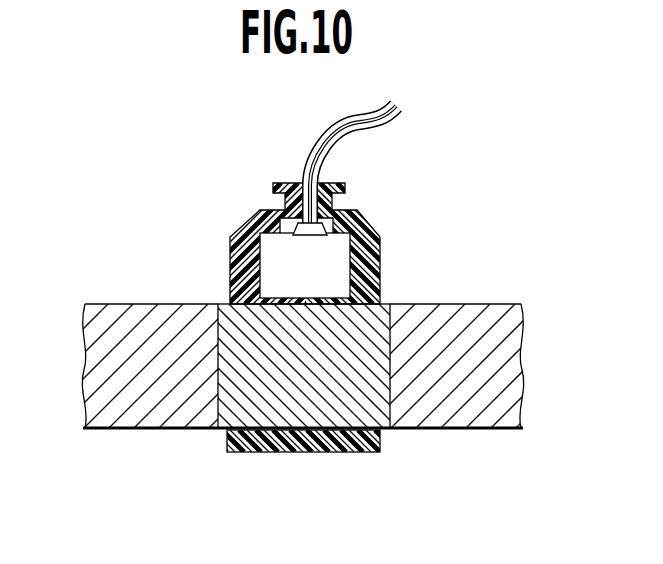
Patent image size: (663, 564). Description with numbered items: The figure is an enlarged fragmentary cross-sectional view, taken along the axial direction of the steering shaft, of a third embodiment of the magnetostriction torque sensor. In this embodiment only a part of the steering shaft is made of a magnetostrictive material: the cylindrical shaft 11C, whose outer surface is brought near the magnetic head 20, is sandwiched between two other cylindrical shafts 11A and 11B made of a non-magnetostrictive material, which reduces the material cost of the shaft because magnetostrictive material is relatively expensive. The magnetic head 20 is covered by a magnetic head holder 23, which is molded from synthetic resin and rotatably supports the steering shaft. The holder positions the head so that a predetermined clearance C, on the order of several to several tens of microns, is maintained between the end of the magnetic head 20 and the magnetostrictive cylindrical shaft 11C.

The cylindrical shaft 11A is at (148, 415).
The cylindrical shaft 11B is at (468, 410).
The cylindrical shaft 11C is at (240, 413).
The magnetic head 20 is at (328, 252).
The magnetic head holder 23 is at (367, 273).
The clearance C is at (295, 330).